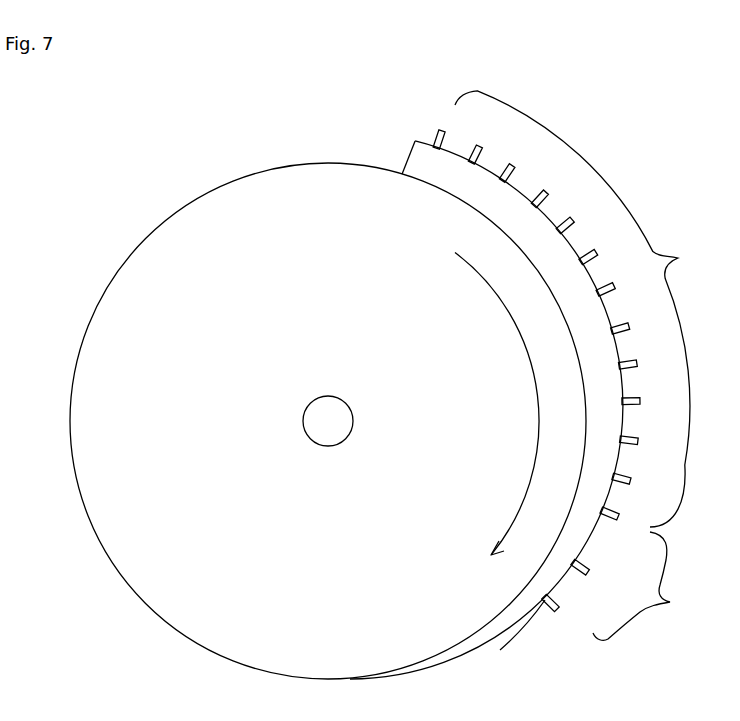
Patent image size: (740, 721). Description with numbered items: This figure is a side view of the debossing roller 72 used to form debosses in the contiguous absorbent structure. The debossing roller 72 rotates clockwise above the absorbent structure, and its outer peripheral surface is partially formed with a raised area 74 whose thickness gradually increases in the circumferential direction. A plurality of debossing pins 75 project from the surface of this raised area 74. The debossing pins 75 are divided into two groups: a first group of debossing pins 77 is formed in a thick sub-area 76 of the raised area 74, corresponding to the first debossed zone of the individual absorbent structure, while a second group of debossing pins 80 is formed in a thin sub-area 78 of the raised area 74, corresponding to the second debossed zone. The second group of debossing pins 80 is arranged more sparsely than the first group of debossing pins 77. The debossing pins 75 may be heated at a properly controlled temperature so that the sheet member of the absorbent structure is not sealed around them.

The debossing roller 72 is at (147, 177).
The raised area 74 is at (418, 161).
The debossing pins 75 is at (510, 167).
The thick sub-area 76 is at (532, 233).
The first group of debossing pins 77 is at (580, 309).
The thin sub-area 78 is at (527, 596).
The second group of debossing pins 80 is at (644, 586).